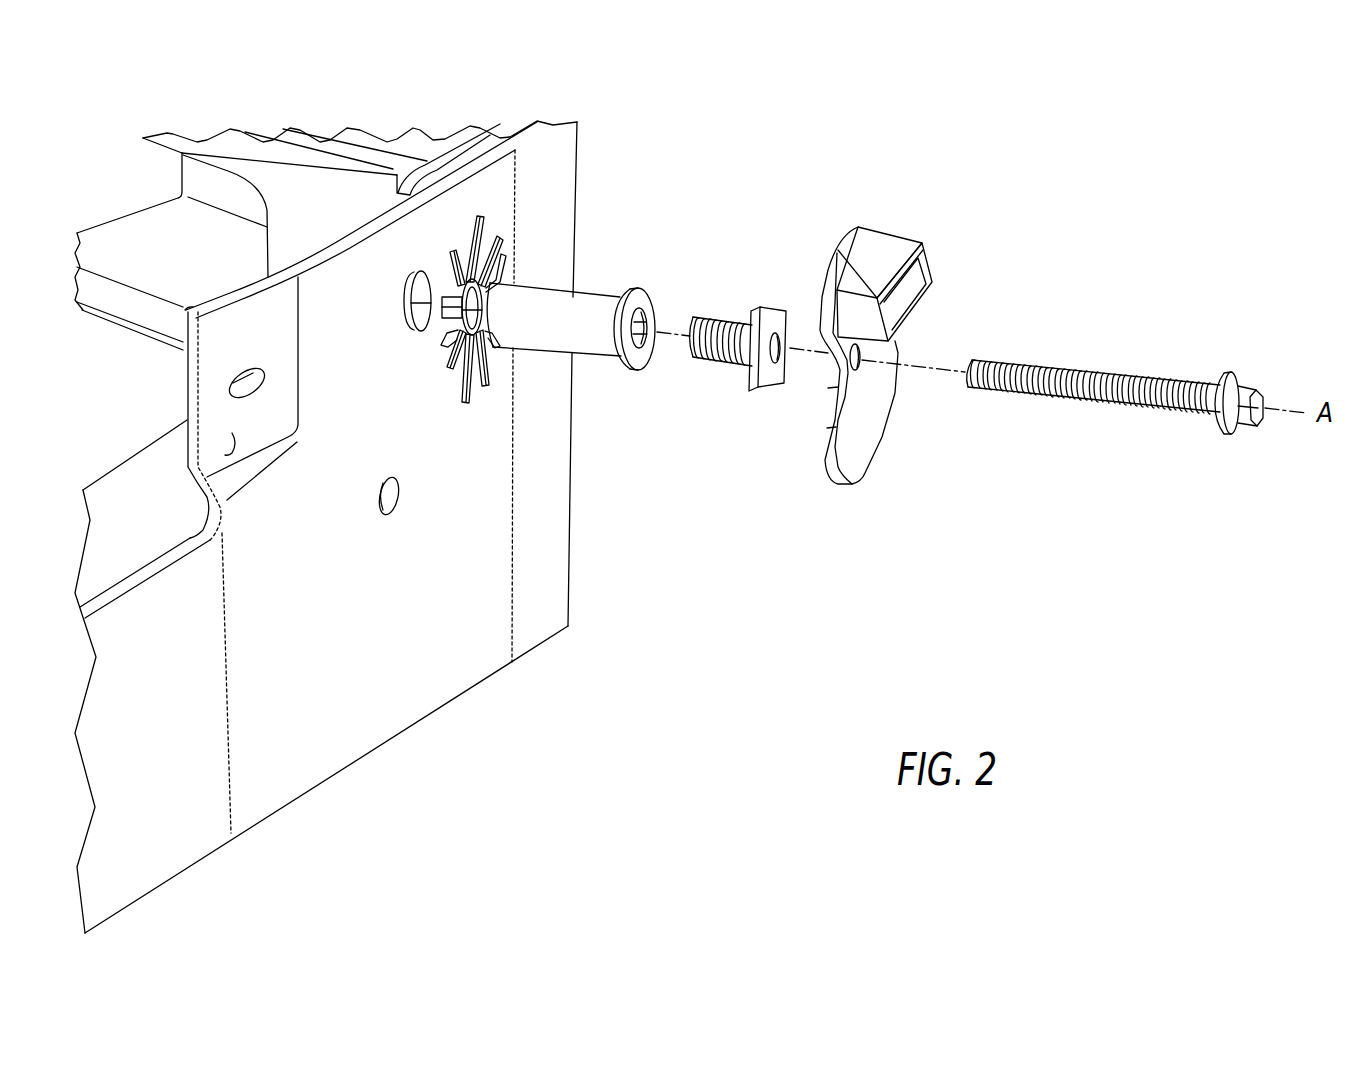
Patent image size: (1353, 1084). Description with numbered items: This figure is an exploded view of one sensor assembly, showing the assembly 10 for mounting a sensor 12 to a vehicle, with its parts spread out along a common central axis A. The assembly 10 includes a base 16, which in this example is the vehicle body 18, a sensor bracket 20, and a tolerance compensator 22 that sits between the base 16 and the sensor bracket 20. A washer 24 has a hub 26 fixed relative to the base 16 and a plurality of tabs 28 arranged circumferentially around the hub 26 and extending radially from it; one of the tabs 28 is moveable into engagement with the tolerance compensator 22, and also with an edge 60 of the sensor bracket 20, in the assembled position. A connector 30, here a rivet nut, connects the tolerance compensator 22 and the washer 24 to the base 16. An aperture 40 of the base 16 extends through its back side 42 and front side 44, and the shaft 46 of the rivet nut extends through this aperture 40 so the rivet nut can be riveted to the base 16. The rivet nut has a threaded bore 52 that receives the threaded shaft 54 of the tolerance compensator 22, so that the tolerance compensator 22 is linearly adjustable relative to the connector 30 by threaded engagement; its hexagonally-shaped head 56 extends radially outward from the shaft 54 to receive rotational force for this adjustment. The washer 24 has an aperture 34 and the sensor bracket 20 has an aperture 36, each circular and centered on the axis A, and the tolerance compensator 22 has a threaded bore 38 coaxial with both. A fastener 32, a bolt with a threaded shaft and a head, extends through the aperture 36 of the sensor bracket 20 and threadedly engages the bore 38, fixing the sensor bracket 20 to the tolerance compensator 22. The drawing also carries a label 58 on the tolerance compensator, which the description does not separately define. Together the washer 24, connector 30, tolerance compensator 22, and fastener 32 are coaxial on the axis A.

The assembly 10 is at (1140, 193).
The sensor 12 is at (917, 272).
The base 16 is at (326, 527).
The vehicle body 18 is at (410, 730).
The sensor bracket 20 is at (905, 358).
The tolerance compensator 22 is at (719, 357).
The washer 24 is at (579, 337).
The hub 26 is at (437, 261).
The tabs 28 is at (503, 217).
The connector 30 is at (579, 367).
The fastener 32 is at (1097, 400).
The aperture 34 is at (453, 282).
The aperture 36 is at (862, 363).
The bore 38 is at (783, 348).
The aperture 40 is at (407, 313).
The back side 42 is at (187, 397).
The front side 44 is at (233, 450).
The shaft 46 is at (563, 327).
The bore 52 is at (647, 347).
The shaft 54 is at (723, 320).
The head 56 is at (772, 359).
The plate edges 58 is at (760, 373).
The edge 60 is at (838, 373).